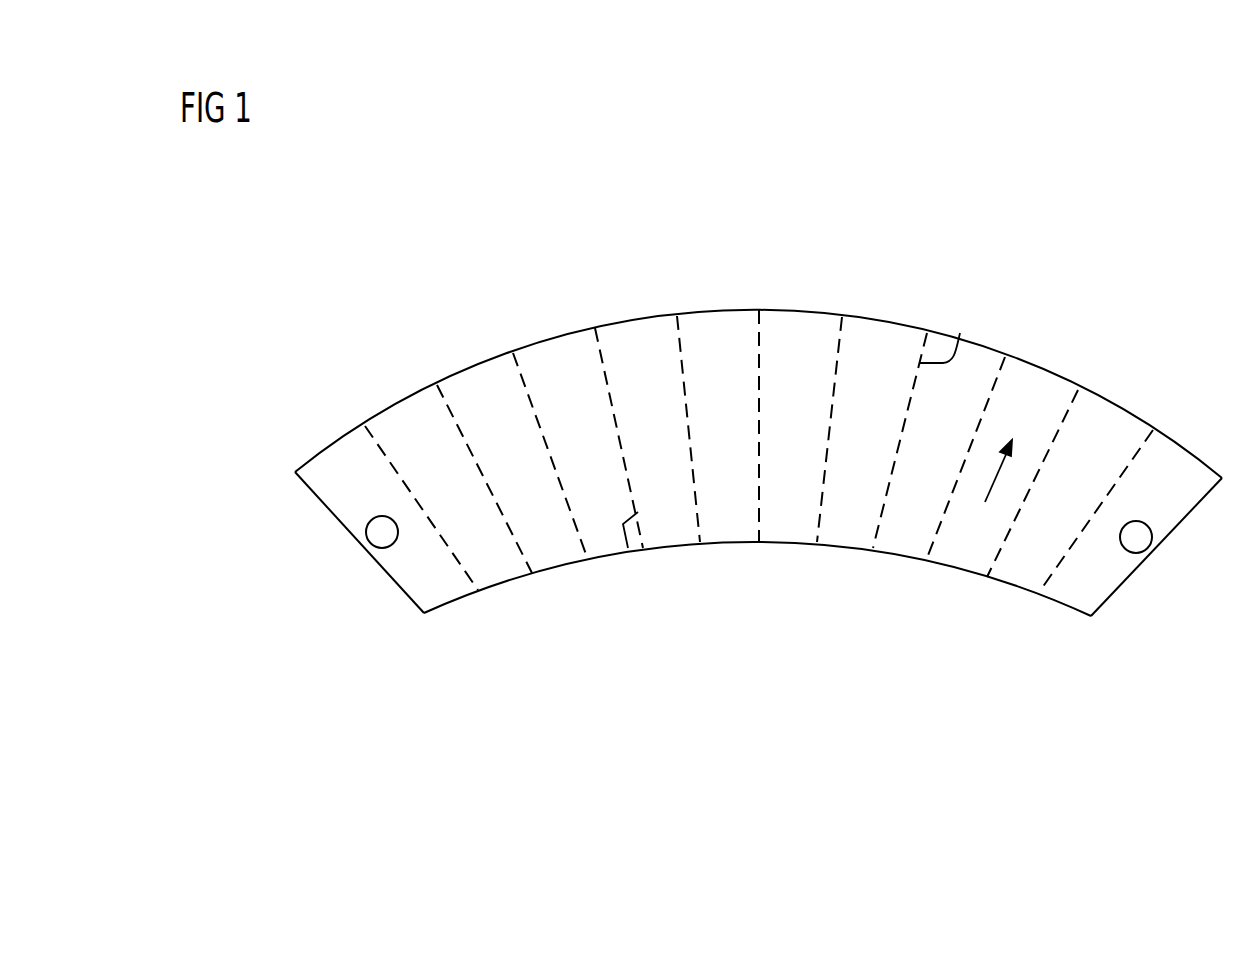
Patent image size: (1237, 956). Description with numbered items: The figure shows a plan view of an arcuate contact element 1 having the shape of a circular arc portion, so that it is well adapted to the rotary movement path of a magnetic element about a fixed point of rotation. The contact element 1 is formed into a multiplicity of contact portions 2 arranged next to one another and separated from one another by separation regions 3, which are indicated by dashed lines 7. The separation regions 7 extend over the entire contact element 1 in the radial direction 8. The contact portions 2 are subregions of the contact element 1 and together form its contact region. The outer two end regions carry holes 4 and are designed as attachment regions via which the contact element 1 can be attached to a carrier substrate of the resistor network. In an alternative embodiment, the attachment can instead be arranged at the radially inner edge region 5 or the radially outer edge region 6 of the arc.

The contact element 1 is at (968, 216).
The contact portions 2 is at (478, 381).
The separation regions 3 is at (597, 337).
The holes 4 is at (382, 532).
The radially inner edge region 5 is at (768, 543).
The radially outer edge region 6 is at (825, 313).
The dashed lines 7 is at (960, 333).
The radial direction 8 is at (995, 483).